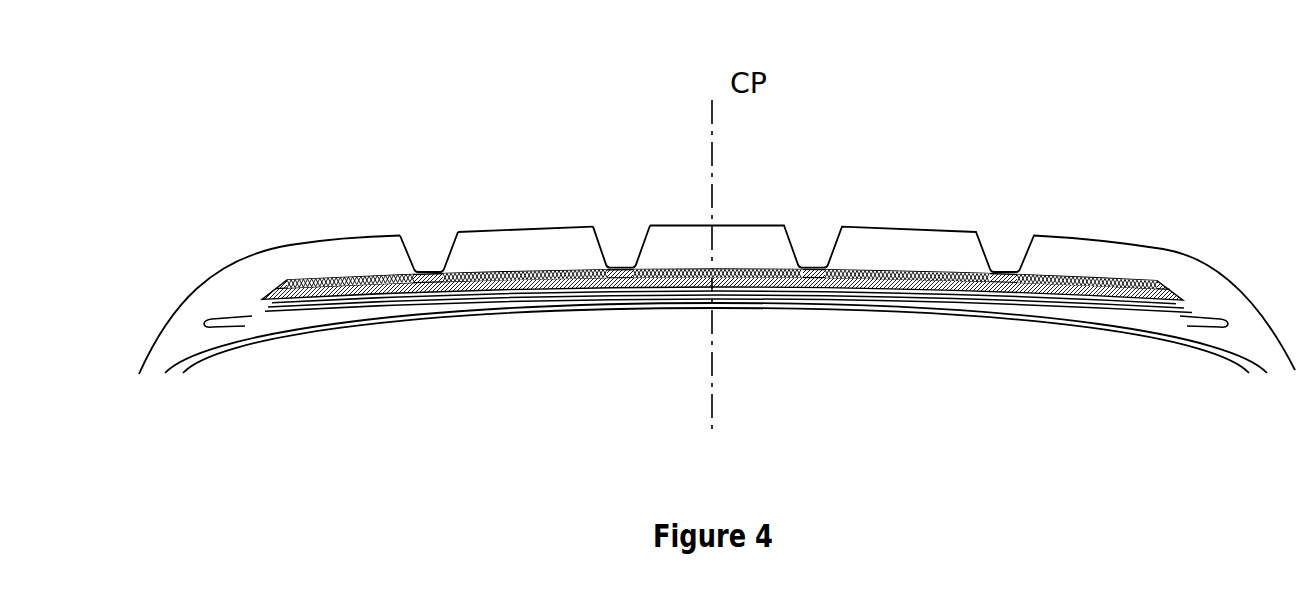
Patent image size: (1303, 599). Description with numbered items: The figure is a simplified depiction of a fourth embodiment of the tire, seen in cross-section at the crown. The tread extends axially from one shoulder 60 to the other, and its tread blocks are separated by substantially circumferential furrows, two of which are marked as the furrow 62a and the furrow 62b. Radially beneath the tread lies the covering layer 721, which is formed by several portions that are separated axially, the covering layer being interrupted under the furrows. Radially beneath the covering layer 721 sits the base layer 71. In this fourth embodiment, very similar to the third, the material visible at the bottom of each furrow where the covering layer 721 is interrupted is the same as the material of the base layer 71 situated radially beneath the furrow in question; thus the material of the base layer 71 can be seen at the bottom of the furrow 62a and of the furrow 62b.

The shoulder 60 is at (204, 268).
The furrow 62a is at (428, 250).
The furrow 62b is at (623, 250).
The base layer 71 is at (677, 281).
The covering layer 721 is at (472, 277).